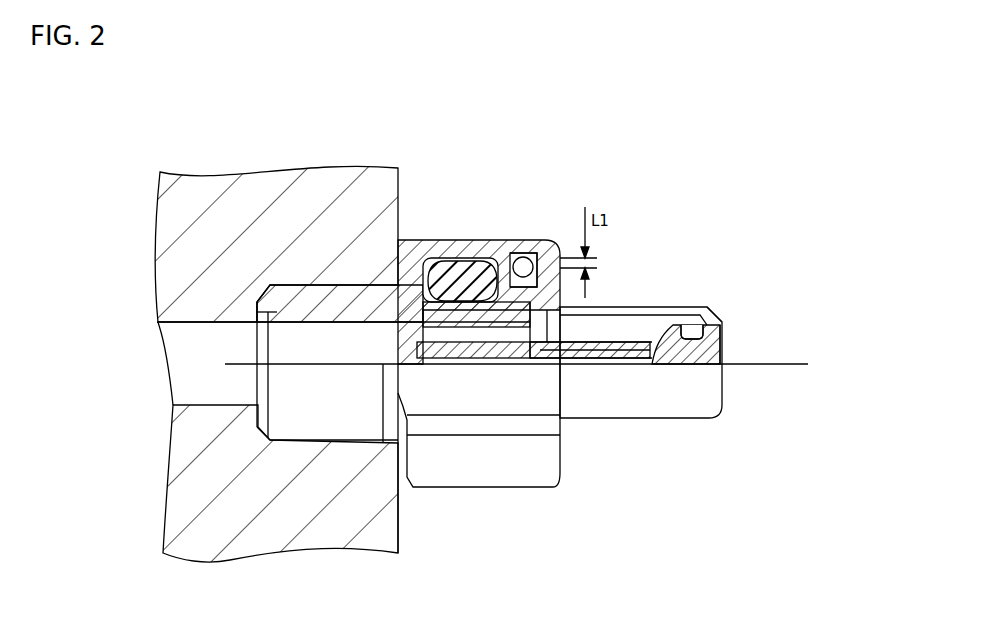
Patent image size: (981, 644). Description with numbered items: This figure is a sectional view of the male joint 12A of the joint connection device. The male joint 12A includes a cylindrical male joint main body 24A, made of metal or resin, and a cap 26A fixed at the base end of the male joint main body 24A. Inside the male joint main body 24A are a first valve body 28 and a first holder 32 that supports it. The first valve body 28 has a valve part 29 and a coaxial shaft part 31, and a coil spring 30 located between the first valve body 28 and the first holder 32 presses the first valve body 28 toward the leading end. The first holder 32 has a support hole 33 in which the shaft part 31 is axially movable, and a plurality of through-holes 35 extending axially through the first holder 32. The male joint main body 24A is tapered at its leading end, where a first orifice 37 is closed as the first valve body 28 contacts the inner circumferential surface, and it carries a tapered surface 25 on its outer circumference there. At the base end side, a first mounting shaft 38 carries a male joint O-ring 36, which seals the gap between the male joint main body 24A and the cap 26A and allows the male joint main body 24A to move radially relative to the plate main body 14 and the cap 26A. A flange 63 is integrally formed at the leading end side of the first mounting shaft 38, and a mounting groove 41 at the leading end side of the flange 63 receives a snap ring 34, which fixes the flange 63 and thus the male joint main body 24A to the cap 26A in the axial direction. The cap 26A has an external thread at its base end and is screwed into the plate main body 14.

The male joint 12A is at (695, 168).
The plate main body 14 is at (253, 554).
The male joint main body 24A is at (677, 307).
The tapered surface 25 is at (721, 306).
The cap 26A is at (257, 312).
The first valve body 28 is at (727, 334).
The valve part 29 is at (687, 364).
The coil spring 30 is at (624, 340).
The shaft part 31 is at (611, 360).
The first holder 32 is at (463, 327).
The support hole 33 is at (512, 358).
The snap ring 34 is at (524, 260).
The through-holes 35 is at (436, 358).
The male joint O-ring 36 is at (462, 242).
The first orifice 37 is at (724, 352).
The first mounting shaft 38 is at (487, 260).
The mounting groove 41 is at (542, 352).
The flange 63 is at (513, 257).